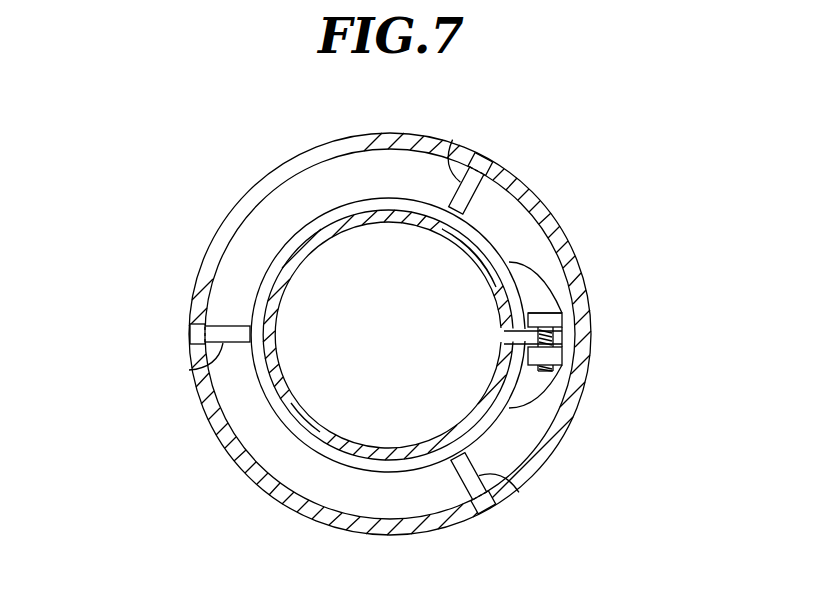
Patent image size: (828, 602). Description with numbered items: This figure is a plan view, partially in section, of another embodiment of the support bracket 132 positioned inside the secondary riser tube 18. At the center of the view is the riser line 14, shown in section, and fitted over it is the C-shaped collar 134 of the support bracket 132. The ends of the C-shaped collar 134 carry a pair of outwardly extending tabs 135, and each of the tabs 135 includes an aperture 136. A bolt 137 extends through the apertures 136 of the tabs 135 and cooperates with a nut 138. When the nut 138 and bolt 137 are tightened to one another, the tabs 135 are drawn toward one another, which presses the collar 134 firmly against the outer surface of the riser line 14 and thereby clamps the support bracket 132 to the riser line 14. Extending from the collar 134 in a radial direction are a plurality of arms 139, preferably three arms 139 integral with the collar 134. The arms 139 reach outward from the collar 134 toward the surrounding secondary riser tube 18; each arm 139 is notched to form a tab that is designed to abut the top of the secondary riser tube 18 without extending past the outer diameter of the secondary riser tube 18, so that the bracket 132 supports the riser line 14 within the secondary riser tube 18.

The riser line 14 is at (283, 280).
The secondary riser tube 18 is at (527, 195).
The support bracket 132 is at (248, 441).
The C-shaped collar 134 is at (492, 423).
The outwardly extending tabs 135 is at (563, 332).
The aperture 136 is at (558, 313).
The bolt 137 is at (538, 313).
The nut 138 is at (550, 372).
The arms 139 is at (470, 183).